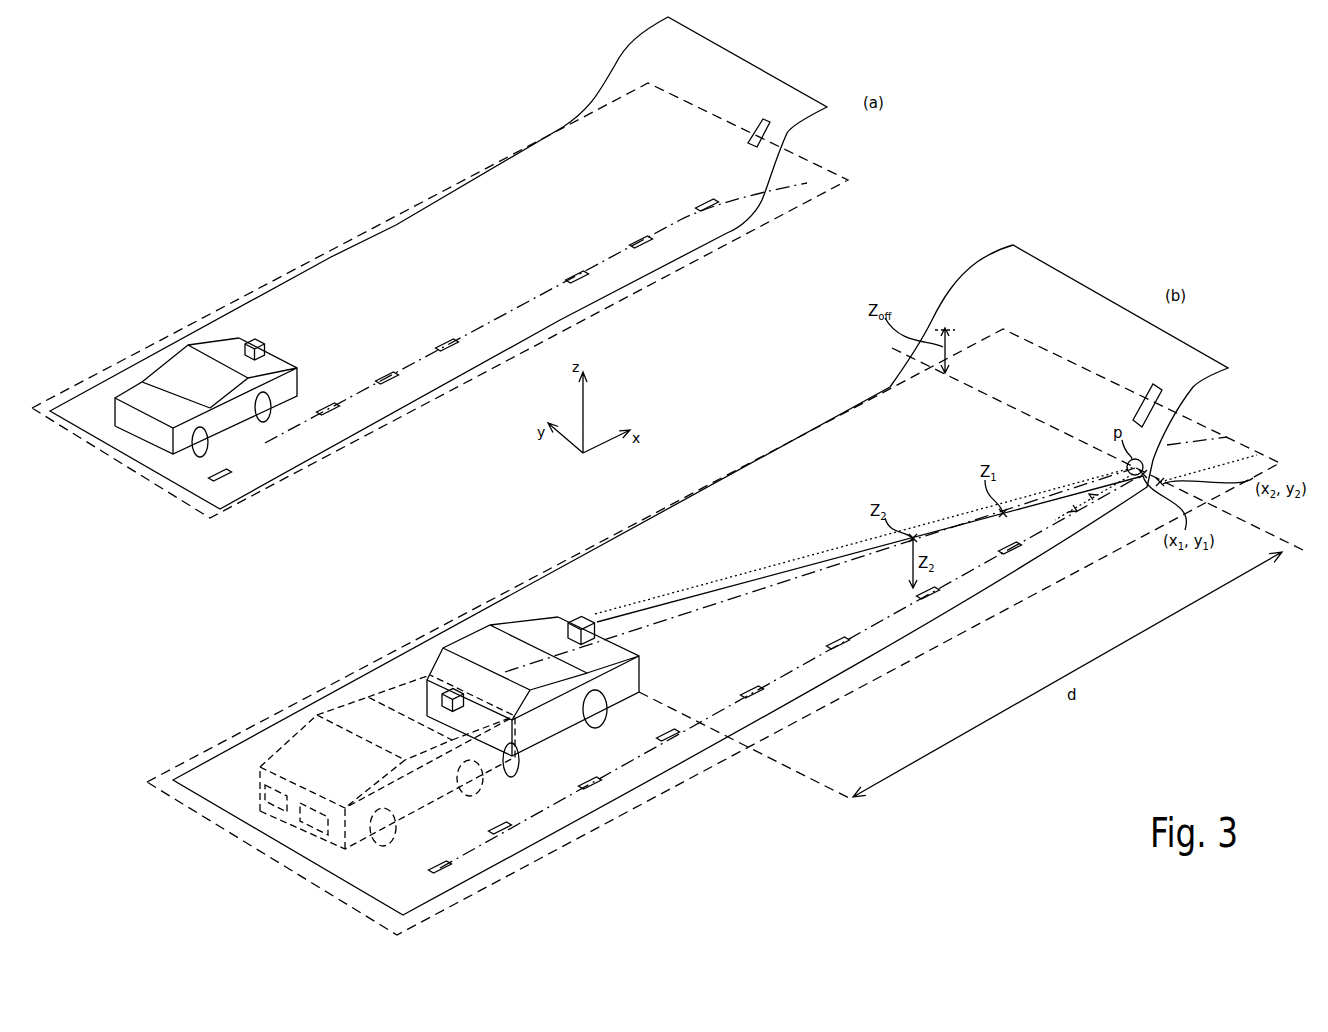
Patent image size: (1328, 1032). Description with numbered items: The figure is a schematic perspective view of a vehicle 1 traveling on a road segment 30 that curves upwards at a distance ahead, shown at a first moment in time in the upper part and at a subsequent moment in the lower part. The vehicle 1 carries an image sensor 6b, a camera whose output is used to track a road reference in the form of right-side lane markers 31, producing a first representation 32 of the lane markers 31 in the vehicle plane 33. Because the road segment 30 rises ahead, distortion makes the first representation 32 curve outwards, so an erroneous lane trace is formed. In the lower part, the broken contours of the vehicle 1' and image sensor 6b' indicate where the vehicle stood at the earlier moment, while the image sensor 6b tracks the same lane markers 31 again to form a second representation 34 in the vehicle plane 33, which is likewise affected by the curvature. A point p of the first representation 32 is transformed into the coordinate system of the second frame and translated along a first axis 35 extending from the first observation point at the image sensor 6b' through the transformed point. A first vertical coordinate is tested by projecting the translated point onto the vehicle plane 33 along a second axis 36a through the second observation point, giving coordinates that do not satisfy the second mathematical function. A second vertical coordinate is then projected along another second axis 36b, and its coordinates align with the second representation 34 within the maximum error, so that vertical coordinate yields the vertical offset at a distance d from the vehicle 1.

The road segment 30 is at (460, 140).
The lane markers 31 is at (228, 480).
The first representation 32 is at (682, 224).
The vehicle plane 33 is at (800, 210).
The second representation 34 is at (1253, 455).
The first axis 35 is at (752, 593).
The second axis 36a is at (873, 540).
The second axis 36b is at (1050, 512).
The vehicle 1 is at (377, 530).
The vehicle at previous moment in time 1' is at (363, 760).
The image sensor 6b is at (401, 448).
The image sensor at previous moment in time 6b' is at (369, 671).